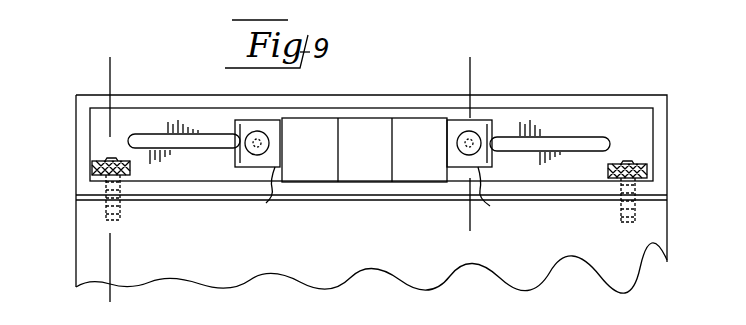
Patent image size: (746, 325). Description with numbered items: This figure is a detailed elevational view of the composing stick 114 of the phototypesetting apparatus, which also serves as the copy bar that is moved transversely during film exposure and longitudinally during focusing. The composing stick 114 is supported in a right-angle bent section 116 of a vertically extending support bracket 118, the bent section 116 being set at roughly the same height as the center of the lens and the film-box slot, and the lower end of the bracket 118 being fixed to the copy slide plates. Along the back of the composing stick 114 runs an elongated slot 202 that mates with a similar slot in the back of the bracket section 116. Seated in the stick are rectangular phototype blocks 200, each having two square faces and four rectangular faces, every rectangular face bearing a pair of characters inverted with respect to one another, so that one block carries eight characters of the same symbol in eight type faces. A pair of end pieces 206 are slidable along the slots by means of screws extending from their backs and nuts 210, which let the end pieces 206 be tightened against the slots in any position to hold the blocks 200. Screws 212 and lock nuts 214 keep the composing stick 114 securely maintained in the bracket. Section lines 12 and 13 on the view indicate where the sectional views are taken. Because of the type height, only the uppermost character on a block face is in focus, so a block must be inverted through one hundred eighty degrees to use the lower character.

The section line 12- 12 is at (470, 57).
The section line 13- 13 is at (110, 57).
The composing stick 114 is at (634, 140).
The right-angle bent section 116 is at (660, 191).
The support bracket 118 is at (655, 251).
The phototype blocks 200 is at (400, 118).
The elongated slot 202 is at (555, 143).
The end pieces 206 is at (385, 196).
The nuts 210 is at (248, 118).
The screws 212 is at (124, 212).
The lock nuts 214 is at (92, 167).